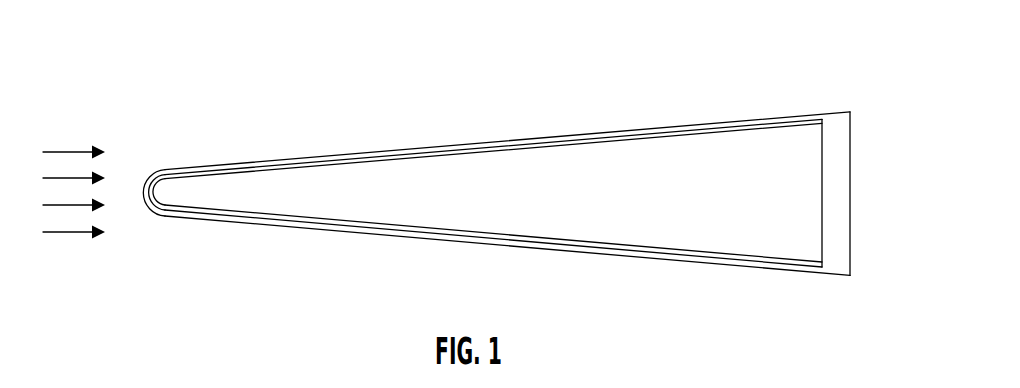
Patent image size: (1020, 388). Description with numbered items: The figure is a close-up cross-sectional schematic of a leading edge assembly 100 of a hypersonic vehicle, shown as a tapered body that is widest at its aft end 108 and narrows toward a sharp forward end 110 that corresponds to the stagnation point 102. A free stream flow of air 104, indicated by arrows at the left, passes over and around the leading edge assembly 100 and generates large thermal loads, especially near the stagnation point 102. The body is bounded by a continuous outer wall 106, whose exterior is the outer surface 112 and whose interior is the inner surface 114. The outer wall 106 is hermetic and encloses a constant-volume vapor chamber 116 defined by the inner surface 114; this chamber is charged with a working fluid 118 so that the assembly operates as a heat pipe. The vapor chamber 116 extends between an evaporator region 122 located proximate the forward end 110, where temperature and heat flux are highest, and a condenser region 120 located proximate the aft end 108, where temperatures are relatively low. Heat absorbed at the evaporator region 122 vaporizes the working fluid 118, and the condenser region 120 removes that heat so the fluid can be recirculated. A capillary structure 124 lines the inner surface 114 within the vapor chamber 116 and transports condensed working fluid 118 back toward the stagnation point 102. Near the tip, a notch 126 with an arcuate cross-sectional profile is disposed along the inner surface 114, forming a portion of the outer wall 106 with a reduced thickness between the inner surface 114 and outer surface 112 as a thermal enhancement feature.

The leading edge assembly 100 is at (187, 81).
The stagnation point 102 is at (147, 193).
The free stream flow of air 104 is at (70, 152).
The outer wall 106 is at (308, 228).
The aft end 108 is at (856, 107).
The forward end 110 is at (181, 178).
The outer surface 112 is at (715, 270).
The inner surface 114 is at (607, 238).
The vapor chamber 116 is at (549, 208).
The working fluid 118 is at (694, 176).
The condenser region 120 is at (820, 212).
The evaporator region 122 is at (150, 188).
The capillary structure 124 is at (456, 232).
The notch 126 is at (157, 215).